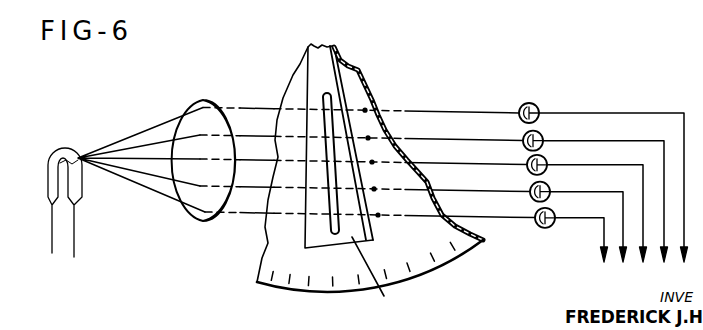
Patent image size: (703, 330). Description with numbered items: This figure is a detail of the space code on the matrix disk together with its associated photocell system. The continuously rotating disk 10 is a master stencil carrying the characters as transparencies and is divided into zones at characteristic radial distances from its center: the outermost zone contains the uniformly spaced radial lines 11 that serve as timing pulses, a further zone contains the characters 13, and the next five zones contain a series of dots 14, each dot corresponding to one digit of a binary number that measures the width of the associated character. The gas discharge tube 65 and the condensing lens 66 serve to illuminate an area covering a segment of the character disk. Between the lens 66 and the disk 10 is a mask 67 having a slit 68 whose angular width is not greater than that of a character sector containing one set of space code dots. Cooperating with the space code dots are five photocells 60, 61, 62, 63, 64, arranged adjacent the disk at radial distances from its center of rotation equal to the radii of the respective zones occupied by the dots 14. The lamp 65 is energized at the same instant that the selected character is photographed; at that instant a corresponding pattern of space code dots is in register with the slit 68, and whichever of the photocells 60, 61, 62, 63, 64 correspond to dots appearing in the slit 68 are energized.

The rotating disk 10 is at (267, 233).
The radial lines 11 is at (437, 262).
The characters 13 is at (262, 258).
The dots 14 is at (381, 147).
The photocell 60 is at (549, 228).
The photocell 61 is at (551, 188).
The photocell 62 is at (547, 162).
The photocell 63 is at (542, 137).
The photocell 64 is at (537, 105).
The gas discharge tube 65 is at (55, 150).
The condensing lens 66 is at (186, 101).
The mask 67 is at (380, 279).
The slit 68 is at (336, 88).